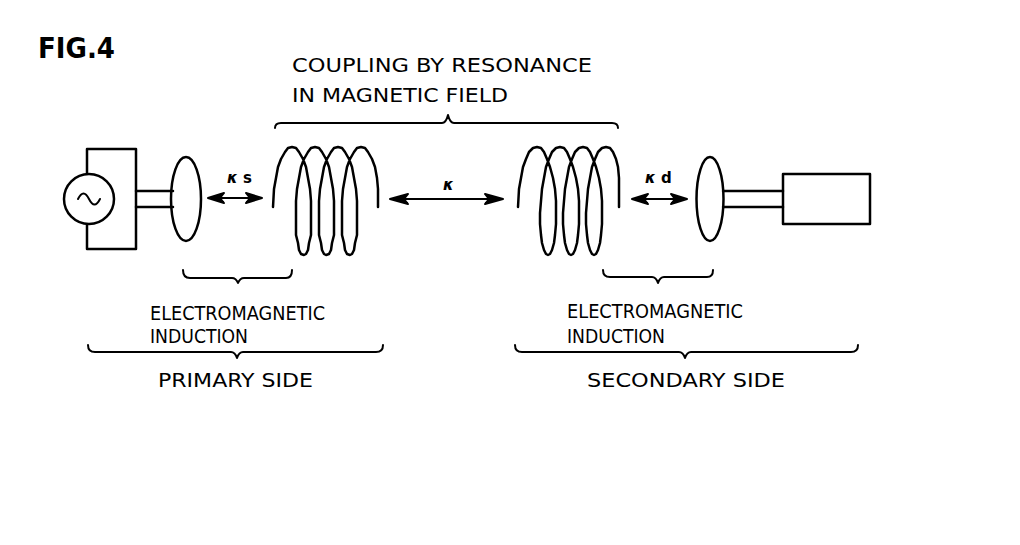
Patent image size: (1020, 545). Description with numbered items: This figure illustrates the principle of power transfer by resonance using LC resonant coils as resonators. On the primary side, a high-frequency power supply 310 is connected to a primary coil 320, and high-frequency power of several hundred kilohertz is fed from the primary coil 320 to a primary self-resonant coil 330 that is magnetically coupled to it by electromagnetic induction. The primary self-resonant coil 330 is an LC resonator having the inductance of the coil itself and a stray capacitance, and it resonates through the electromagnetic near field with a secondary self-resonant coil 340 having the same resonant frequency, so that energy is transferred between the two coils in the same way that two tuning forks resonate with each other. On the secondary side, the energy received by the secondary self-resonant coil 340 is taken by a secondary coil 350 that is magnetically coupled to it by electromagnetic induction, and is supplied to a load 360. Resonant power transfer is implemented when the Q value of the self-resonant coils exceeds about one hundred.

The high-frequency power supply 310 is at (80, 178).
The primary coil 320 is at (184, 157).
The primary self-resonant coil 330 is at (327, 257).
The secondary self-resonant coil 340 is at (568, 257).
The secondary coil 350 is at (710, 157).
The load 360 is at (828, 174).